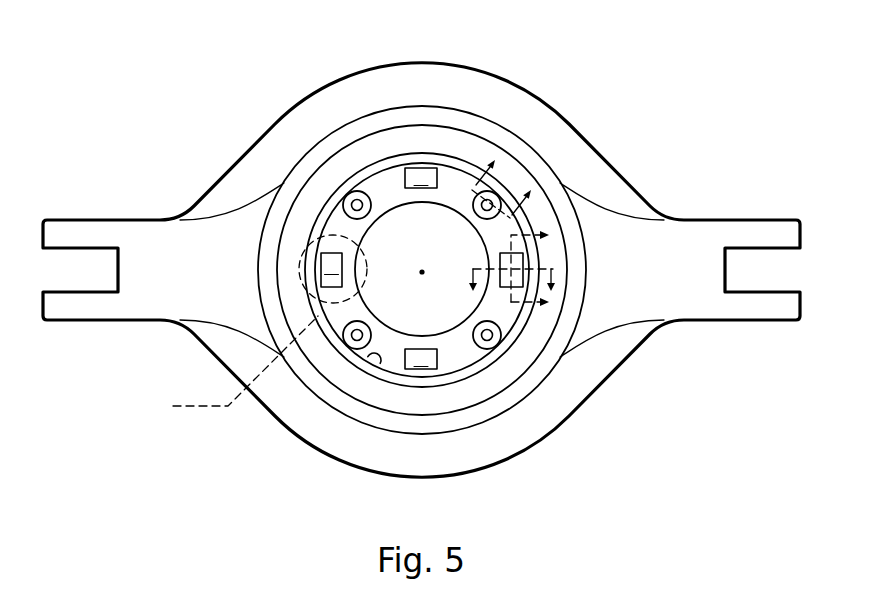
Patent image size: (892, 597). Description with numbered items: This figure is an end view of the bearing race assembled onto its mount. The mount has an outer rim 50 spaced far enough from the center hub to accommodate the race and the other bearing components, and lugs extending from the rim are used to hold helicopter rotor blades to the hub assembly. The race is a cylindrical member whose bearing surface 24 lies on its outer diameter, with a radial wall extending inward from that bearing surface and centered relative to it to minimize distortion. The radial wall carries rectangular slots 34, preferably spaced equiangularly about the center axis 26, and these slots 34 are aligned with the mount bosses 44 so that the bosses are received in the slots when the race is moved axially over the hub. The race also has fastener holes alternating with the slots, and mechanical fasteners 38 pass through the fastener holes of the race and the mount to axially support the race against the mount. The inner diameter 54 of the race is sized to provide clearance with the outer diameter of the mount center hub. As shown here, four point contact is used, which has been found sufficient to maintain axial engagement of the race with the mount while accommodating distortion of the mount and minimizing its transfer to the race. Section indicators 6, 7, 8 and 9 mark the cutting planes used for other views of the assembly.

The outer rim 50 is at (470, 63).
The bearing surface 24 is at (447, 387).
The center axis 26 is at (422, 274).
The mechanical fasteners 38 is at (347, 195).
The slots 34 is at (353, 268).
The mount bosses 44 is at (410, 168).
The inner diameter 54 is at (378, 364).
The section line 8- 8 is at (237, 365).
The section line 6- 6 is at (534, 267).
The section line 7- 7 is at (512, 285).
The section line 9- 9 is at (501, 180).